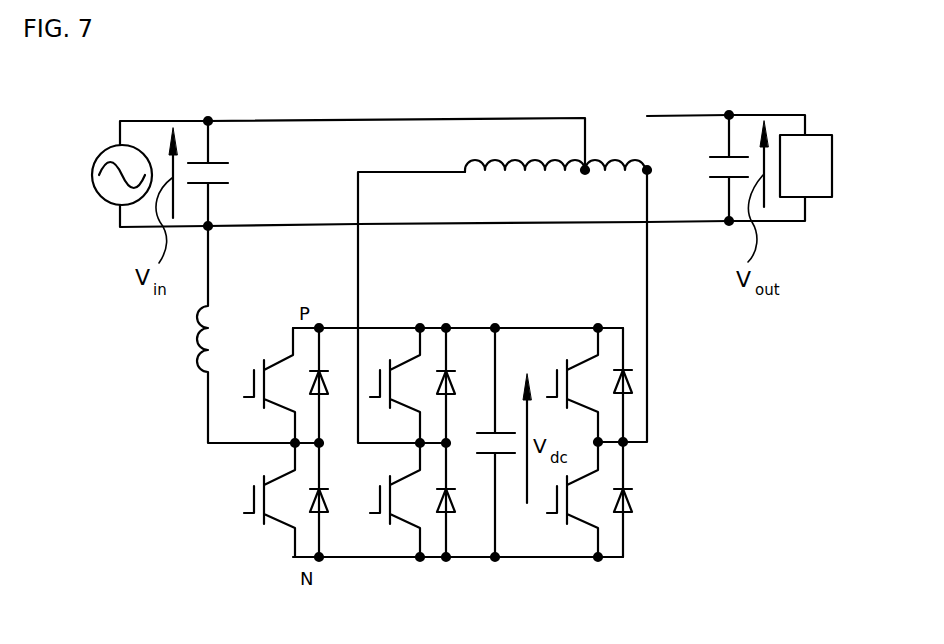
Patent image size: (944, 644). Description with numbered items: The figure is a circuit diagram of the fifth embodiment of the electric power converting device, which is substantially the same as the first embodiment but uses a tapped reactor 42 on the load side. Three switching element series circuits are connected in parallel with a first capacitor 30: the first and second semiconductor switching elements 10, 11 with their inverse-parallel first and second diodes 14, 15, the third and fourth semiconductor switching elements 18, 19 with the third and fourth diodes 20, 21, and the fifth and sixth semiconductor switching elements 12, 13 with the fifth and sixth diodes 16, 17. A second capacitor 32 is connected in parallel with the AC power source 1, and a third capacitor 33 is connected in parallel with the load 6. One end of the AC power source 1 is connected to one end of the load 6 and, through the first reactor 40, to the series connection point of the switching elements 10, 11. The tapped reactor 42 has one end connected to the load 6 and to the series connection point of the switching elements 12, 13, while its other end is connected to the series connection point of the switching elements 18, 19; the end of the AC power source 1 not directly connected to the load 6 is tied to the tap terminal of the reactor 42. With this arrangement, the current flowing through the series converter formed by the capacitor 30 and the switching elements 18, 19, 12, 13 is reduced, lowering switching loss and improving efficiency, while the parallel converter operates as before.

The AC power source 1 is at (108, 148).
The load 6 is at (814, 135).
The first semiconductor switching element 10 is at (273, 356).
The second semiconductor switching element 11 is at (273, 532).
The fifth semiconductor switching element 12 is at (578, 355).
The sixth semiconductor switching element 13 is at (578, 530).
The first diode 14 is at (328, 367).
The second diode 15 is at (325, 520).
The fifth diode 16 is at (628, 364).
The sixth diode 17 is at (628, 515).
The third semiconductor switching element 18 is at (402, 357).
The fourth semiconductor switching element 19 is at (403, 532).
The third diode 20 is at (457, 357).
The fourth diode 21 is at (452, 520).
The first capacitor 30 is at (470, 446).
The second capacitor 32 is at (228, 170).
The third capacitor 33 is at (710, 167).
The first reactor 40 is at (195, 338).
The tapped reactor 42 is at (499, 150).